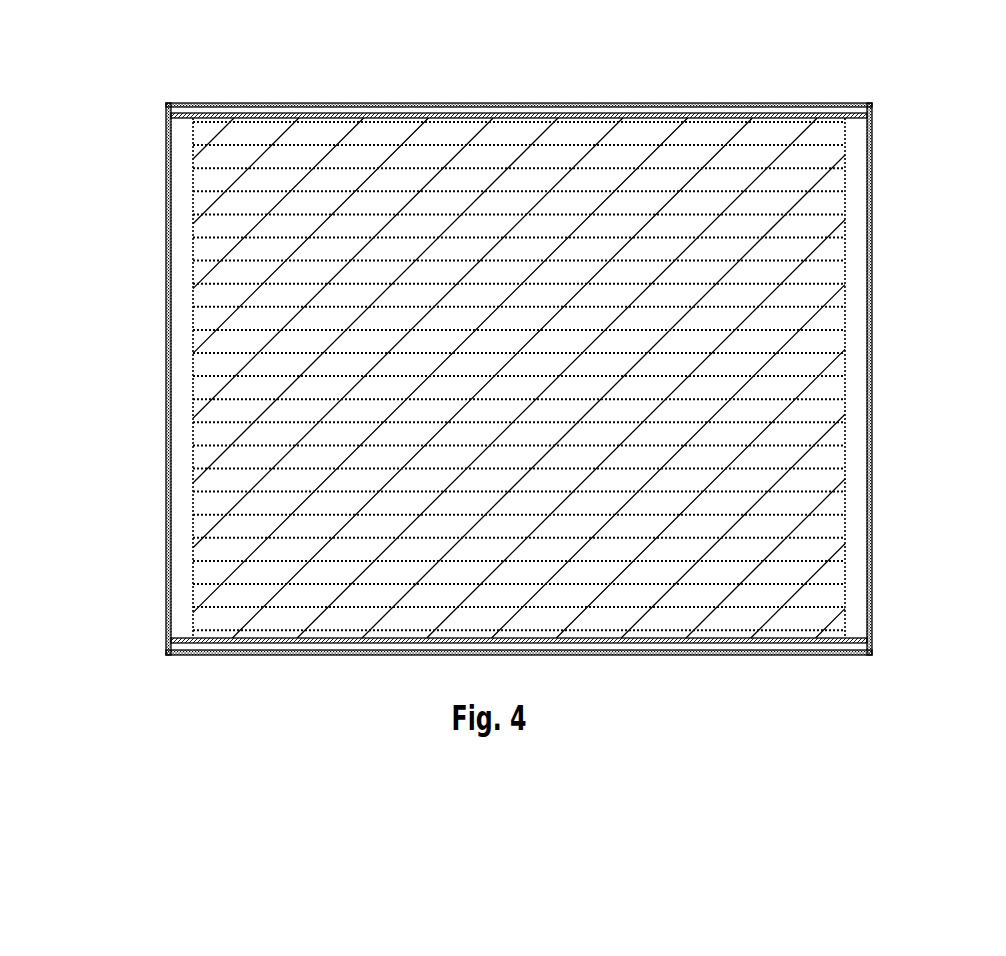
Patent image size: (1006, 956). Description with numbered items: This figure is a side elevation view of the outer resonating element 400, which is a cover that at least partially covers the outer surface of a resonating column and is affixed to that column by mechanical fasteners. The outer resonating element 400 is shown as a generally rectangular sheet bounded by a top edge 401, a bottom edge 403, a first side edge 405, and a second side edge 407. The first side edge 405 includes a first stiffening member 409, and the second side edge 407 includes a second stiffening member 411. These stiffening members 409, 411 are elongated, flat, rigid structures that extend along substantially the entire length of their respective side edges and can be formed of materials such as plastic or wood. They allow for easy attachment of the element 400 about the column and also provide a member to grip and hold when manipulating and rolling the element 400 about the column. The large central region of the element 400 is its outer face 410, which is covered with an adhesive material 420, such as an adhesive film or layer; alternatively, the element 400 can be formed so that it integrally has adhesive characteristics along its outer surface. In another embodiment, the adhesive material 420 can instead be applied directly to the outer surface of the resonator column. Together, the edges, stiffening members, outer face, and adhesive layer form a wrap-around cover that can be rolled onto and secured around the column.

The outer resonating element 400 is at (537, 90).
The top edge 401 is at (678, 102).
The bottom edge 403 is at (707, 655).
The first side edge 405 is at (170, 363).
The second side edge 407 is at (872, 248).
The first stiffening member 409 is at (178, 530).
The second stiffening member 411 is at (855, 413).
The outer face 410 is at (813, 547).
The adhesive material 420 is at (307, 143).